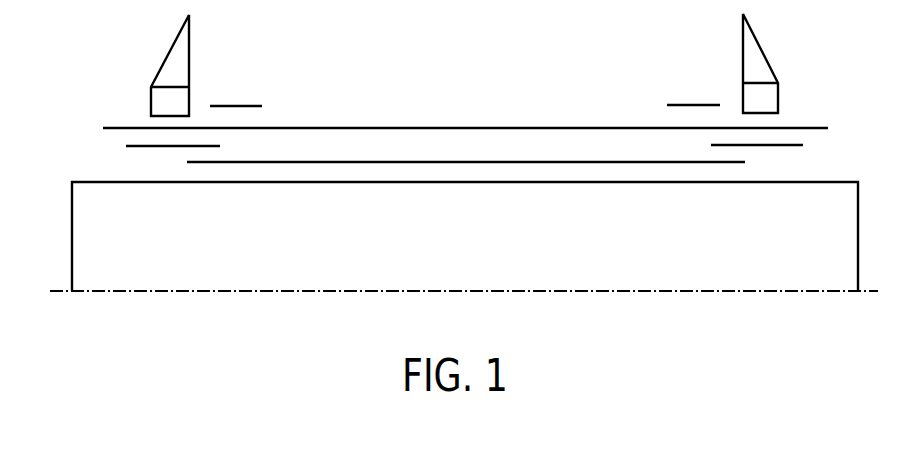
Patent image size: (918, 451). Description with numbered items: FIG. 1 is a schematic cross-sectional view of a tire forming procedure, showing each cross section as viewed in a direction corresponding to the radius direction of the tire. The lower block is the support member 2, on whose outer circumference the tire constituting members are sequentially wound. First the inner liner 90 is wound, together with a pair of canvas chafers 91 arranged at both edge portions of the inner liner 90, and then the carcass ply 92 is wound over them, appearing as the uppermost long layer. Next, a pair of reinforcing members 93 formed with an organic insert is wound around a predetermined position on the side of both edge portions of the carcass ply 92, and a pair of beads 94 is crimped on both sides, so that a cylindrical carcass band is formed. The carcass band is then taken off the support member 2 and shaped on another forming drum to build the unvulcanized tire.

The support member 2 is at (105, 198).
The inner liner 90 is at (465, 162).
The canvas chafers 91 is at (150, 146).
The carcass ply 92 is at (467, 128).
The reinforcing members 93 is at (235, 106).
The beads 94 is at (155, 99).